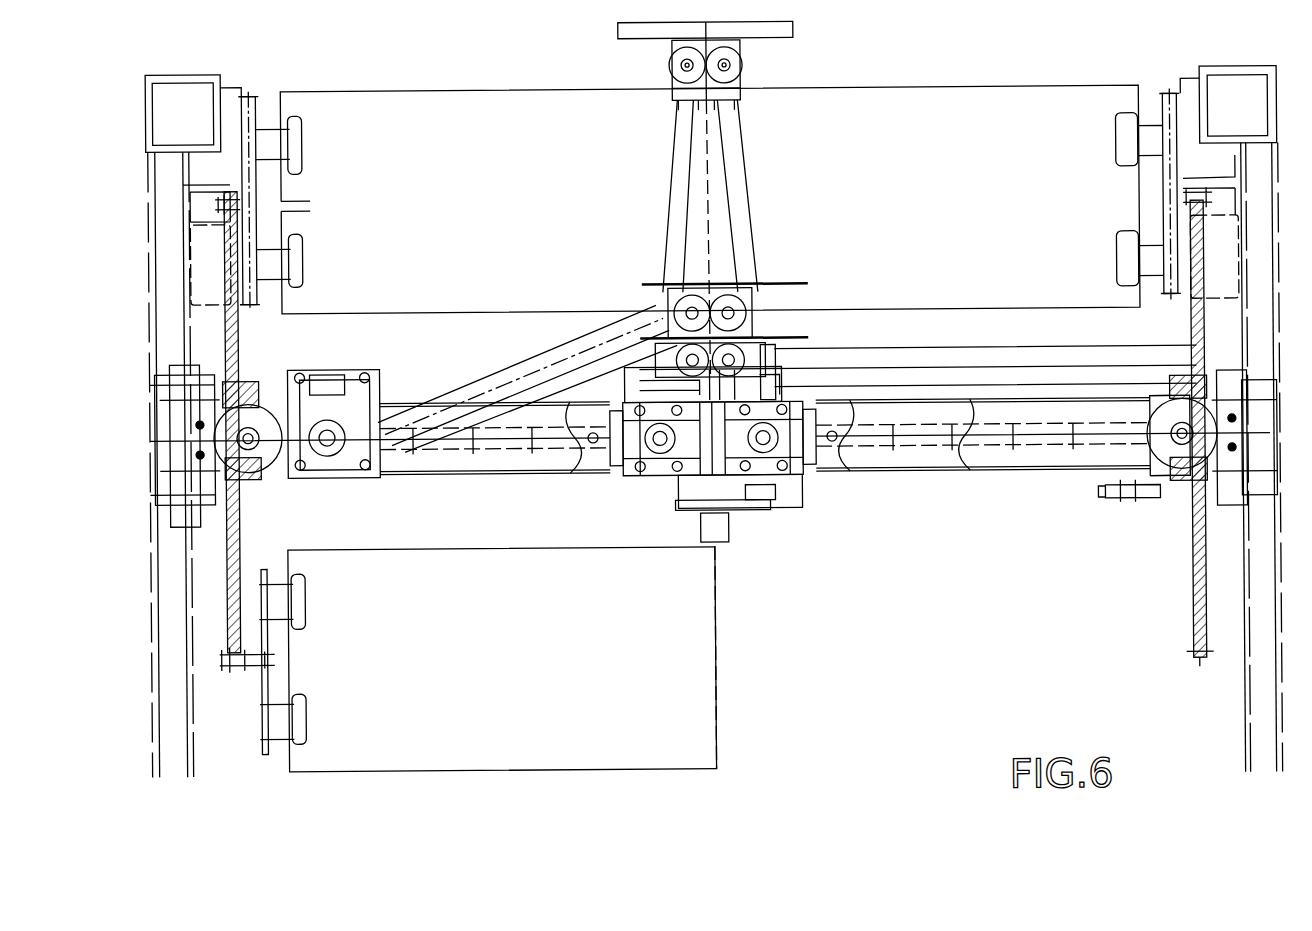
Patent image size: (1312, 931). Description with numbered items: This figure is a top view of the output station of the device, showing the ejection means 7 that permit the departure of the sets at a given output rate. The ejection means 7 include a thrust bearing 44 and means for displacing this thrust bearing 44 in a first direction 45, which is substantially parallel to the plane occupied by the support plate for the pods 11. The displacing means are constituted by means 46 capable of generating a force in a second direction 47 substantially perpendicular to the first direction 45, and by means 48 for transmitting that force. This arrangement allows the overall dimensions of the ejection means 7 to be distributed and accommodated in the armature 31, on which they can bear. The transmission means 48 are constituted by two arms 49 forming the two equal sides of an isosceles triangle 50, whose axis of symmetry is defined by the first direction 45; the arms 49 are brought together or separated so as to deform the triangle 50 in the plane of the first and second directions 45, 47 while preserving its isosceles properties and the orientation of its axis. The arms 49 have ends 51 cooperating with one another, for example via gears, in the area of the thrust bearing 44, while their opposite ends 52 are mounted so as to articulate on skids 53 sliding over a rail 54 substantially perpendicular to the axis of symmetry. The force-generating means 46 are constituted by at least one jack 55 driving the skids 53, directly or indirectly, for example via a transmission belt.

The ejection means 7 is at (841, 562).
The pods 11 is at (386, 117).
The armature 31 is at (176, 676).
The thrust bearing 44 is at (658, 37).
The first direction 45 is at (709, 221).
The means for generating a force 46 is at (936, 347).
The second direction 47 is at (974, 442).
The means for transmitting the force 48 is at (639, 243).
The arms 49 is at (742, 161).
The isosceles triangle 50 is at (762, 266).
The ends of the arms 51 is at (760, 67).
The opposite ends of the arms 52 is at (636, 481).
The skids 53 is at (831, 396).
The rail 54 is at (464, 463).
The jack 55 is at (1049, 358).